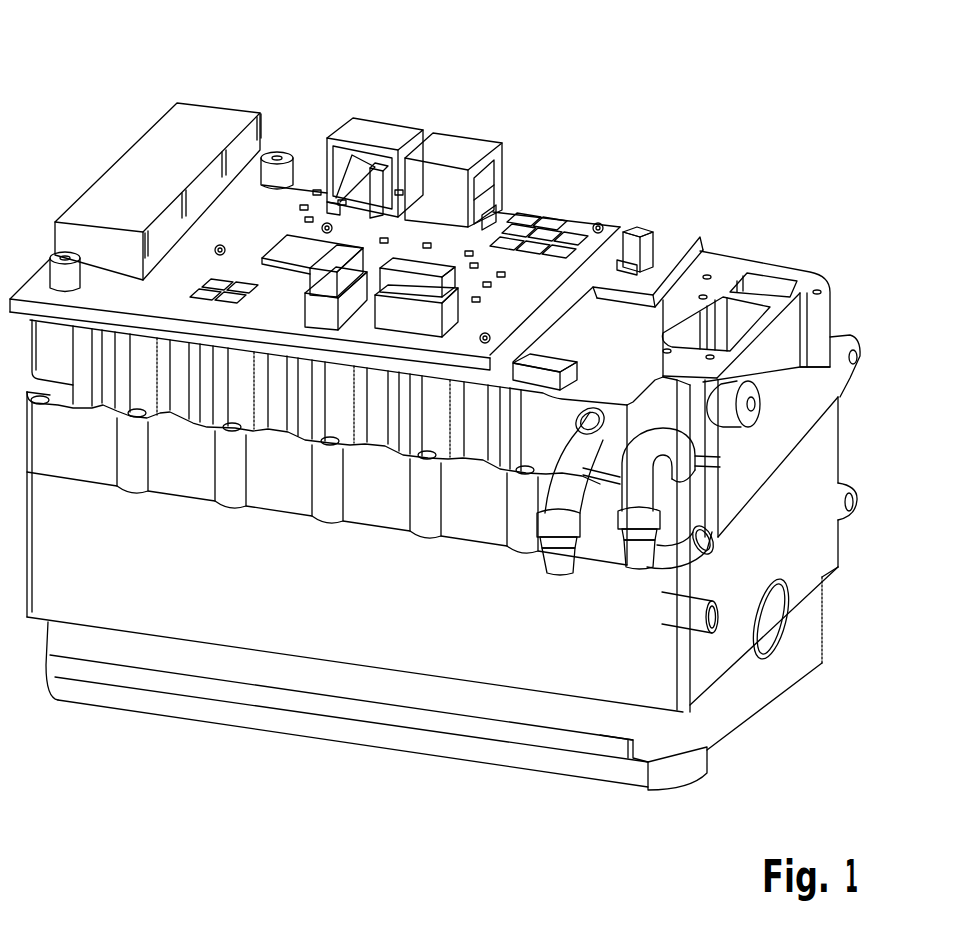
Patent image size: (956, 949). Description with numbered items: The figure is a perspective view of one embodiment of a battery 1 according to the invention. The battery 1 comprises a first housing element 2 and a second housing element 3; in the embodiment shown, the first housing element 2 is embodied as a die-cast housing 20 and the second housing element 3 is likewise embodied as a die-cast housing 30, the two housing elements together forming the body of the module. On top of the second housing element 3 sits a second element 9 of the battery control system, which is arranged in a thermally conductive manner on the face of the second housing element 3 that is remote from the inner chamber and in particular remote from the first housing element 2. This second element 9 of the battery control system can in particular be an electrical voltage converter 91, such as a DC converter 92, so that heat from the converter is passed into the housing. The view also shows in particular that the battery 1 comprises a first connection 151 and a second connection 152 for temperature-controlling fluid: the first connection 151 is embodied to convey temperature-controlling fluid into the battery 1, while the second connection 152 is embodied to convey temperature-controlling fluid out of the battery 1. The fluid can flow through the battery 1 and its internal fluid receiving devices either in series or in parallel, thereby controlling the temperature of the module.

The battery 1 is at (735, 92).
The first housing element 2 is at (376, 706).
The die-cast housing 20 is at (98, 640).
The second housing element 3 is at (355, 556).
The die-cast housing 30 is at (185, 473).
The second element of the battery control system 9 is at (298, 116).
The electrical voltage converter 91 is at (151, 191).
The DC converter 92 is at (133, 177).
The first connection 151 is at (553, 563).
The second connection 152 is at (633, 555).